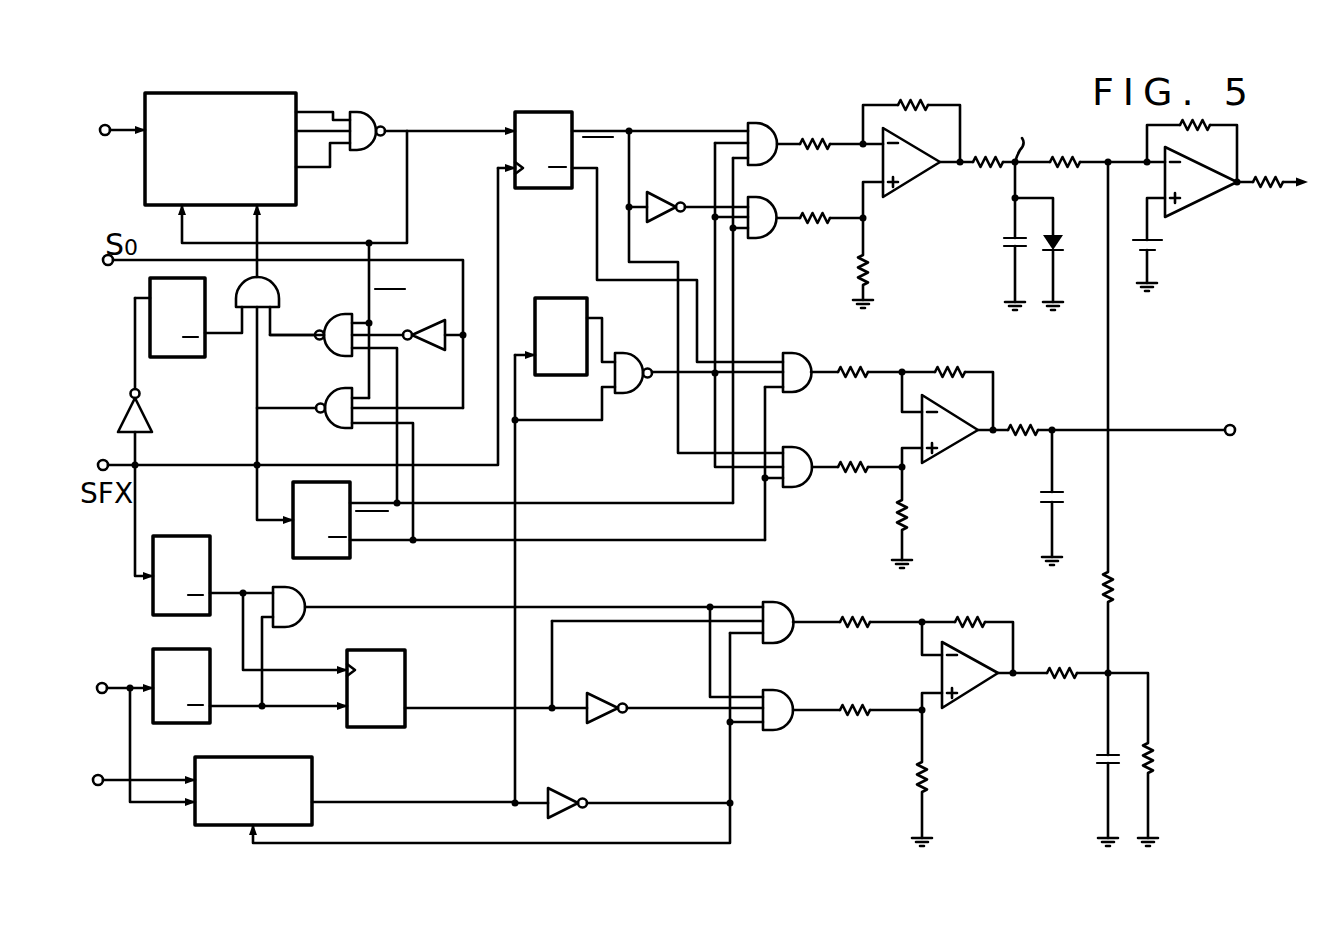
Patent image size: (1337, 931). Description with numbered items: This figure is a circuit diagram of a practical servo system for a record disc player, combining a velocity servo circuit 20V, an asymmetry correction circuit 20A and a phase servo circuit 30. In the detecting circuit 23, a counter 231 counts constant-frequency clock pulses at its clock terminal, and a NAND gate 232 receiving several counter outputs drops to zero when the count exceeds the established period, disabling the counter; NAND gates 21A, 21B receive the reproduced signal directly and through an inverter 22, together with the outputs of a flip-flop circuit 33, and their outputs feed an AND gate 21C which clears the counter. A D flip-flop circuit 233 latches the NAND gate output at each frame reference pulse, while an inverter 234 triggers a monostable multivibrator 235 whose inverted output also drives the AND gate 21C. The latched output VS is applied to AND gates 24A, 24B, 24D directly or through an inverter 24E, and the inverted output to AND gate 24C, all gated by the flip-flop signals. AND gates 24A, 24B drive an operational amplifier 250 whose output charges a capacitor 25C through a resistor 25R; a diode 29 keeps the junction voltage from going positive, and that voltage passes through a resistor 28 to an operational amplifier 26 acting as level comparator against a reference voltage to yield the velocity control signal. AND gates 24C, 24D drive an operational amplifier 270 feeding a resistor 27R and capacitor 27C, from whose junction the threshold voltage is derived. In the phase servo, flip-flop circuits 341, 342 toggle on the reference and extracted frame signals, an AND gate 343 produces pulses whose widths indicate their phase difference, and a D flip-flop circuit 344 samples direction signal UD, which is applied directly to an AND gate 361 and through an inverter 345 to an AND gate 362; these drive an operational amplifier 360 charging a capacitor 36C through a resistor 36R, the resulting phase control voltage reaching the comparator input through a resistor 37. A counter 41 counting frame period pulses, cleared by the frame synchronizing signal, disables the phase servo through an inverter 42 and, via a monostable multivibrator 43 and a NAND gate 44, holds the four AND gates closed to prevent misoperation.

The detecting circuit 23 is at (478, 208).
The counter 231 is at (288, 207).
The NAND gate 232 is at (372, 152).
The D flip-flop circuit 233 is at (528, 190).
The velocity servo circuit 20V is at (850, 118).
The AND gate 24A is at (775, 160).
The AND gate 24B is at (775, 240).
The inverter 24E is at (652, 224).
The operational amplifier 250 is at (905, 198).
The resistor 25R is at (985, 165).
The capacitor 25C is at (1000, 252).
The resistor 28 is at (1068, 168).
The diode 29 is at (1062, 245).
The operational amplifier 26 is at (1205, 200).
The monostable multivibrator 235 is at (188, 358).
The inverter 234 is at (150, 428).
The AND gate 21C is at (277, 283).
The NAND gate 21A is at (340, 358).
The NAND gate 21B is at (340, 430).
The inverter 22 is at (428, 352).
The monostable multivibrator 43 is at (540, 377).
The NAND gate 44 is at (636, 395).
The asymmetry correction circuit 20A is at (850, 340).
The AND gate 24C is at (790, 393).
The AND gate 24D is at (793, 490).
The operational amplifier 270 is at (950, 455).
The resistor 27R is at (1028, 420).
The capacitor 27C is at (1042, 508).
The resistor 37 is at (1127, 595).
The resistor 36R is at (1062, 678).
The capacitor 36C is at (1098, 768).
The operational amplifier 360 is at (970, 700).
The AND gate 361 is at (768, 594).
The AND gate 362 is at (775, 732).
The phase servo circuit 30 is at (490, 669).
The flip-flop circuit 341 is at (183, 536).
The flip-flop circuit 342 is at (200, 724).
The AND gate 343 is at (300, 628).
The D flip-flop circuit 344 is at (390, 730).
The inverter 345 is at (607, 725).
The flip-flop circuit 33 is at (352, 557).
The counter 41 is at (314, 770).
The inverter 42 is at (565, 790).